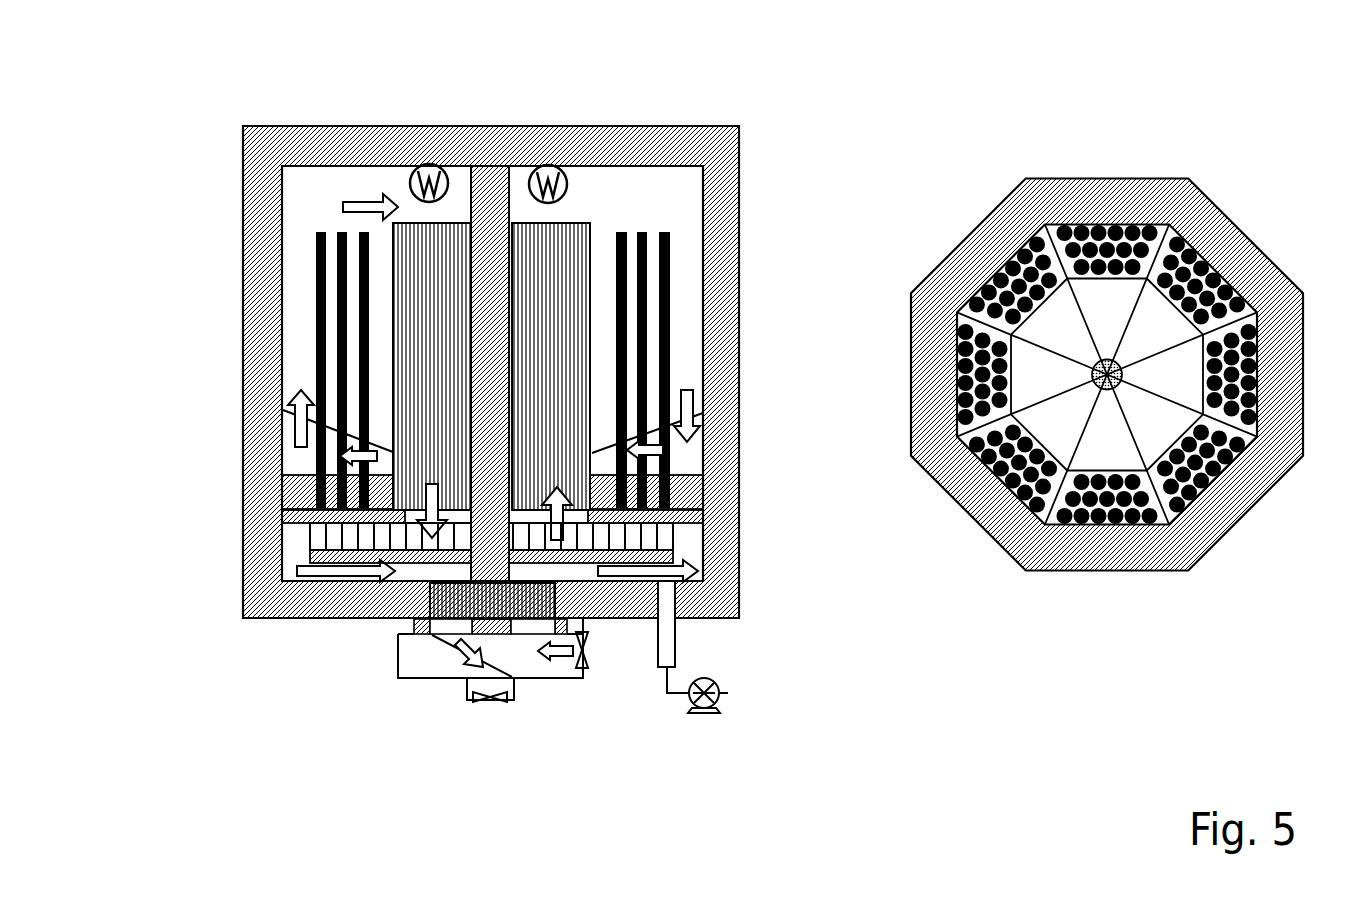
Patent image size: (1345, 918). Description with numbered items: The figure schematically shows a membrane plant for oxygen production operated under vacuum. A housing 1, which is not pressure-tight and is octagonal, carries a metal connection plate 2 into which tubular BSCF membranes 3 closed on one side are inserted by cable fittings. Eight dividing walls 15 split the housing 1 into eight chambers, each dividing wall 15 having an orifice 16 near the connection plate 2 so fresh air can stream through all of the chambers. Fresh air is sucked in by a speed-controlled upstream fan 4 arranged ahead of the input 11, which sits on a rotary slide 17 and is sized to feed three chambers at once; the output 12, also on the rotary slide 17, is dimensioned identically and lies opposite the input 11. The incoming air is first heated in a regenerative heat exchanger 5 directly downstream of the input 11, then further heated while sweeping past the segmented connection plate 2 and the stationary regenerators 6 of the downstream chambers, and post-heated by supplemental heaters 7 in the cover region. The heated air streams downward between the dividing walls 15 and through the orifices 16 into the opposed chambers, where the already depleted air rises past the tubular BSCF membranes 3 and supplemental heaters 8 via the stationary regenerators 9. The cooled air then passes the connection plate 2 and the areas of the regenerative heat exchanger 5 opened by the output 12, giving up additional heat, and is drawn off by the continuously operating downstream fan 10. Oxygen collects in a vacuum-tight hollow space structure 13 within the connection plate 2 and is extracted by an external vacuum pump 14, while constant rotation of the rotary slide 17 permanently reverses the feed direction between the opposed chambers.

The housing 1 is at (725, 395).
The connection plate 2 is at (307, 525).
The tubular BSCF membranes 3 is at (1090, 367).
The upstream fan 4 is at (581, 660).
The regenerative heat exchanger 5 is at (457, 623).
The regenerator 6 is at (1165, 420).
The supplemental heater 7 is at (550, 165).
The supplemental heater 8 is at (430, 165).
The regenerator 9 is at (432, 275).
The downstream fan 10 is at (507, 700).
The input 11 is at (525, 630).
The output 12 is at (445, 598).
The hollow space structure 13 is at (663, 532).
The vacuum pump 14 is at (720, 702).
The dividing wall 15 is at (487, 197).
The orifice 16 is at (282, 458).
The rotary slide 17 is at (415, 630).